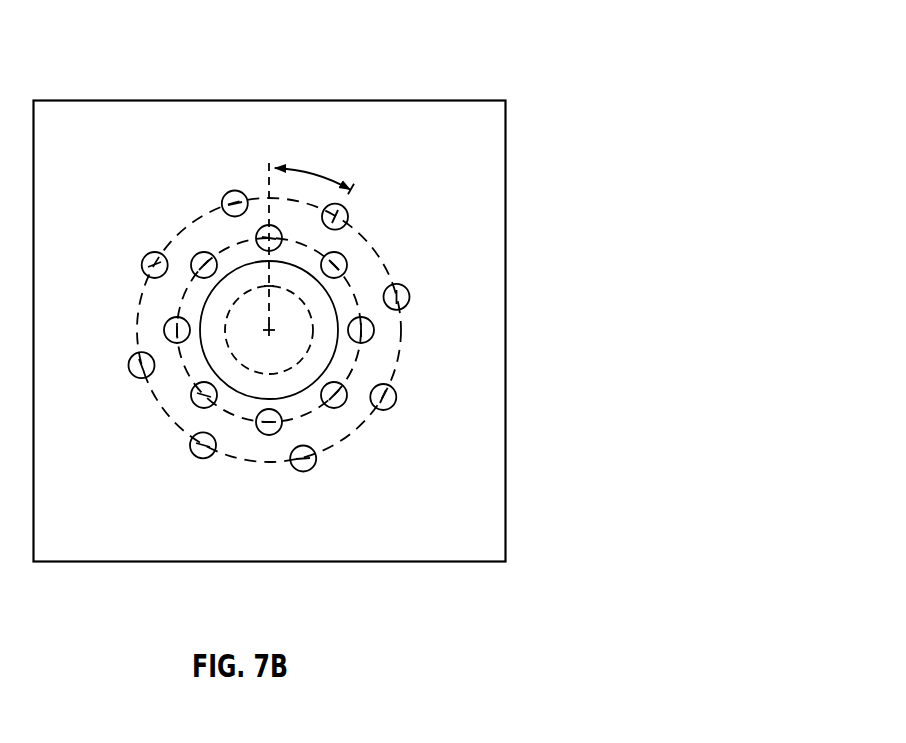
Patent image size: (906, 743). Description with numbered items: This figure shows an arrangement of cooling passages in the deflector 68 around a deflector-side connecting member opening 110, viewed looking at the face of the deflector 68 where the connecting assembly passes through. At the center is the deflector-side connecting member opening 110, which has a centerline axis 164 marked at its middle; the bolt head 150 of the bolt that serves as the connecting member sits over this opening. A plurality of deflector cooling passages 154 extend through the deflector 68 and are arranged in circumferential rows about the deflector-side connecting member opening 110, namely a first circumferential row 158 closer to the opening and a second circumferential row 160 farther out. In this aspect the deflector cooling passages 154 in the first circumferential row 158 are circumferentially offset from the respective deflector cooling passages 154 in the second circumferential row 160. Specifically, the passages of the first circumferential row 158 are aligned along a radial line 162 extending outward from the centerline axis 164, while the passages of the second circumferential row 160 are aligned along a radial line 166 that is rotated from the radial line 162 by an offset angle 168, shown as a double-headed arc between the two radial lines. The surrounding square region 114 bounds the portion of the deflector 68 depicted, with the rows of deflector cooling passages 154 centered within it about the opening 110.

The deflector 68 is at (522, 67).
The substrate / panel 114 is at (487, 174).
The radial line 162 is at (268, 183).
The offset angle 168 is at (310, 172).
The radial line 166 is at (347, 209).
The centerline axis 164 is at (265, 325).
The deflector cooling passages 154 is at (410, 296).
The deflector-side connecting member opening 110 is at (314, 339).
The bolt head 150 is at (307, 390).
The first circumferential row 158 is at (233, 418).
The second circumferential row 160 is at (165, 414).